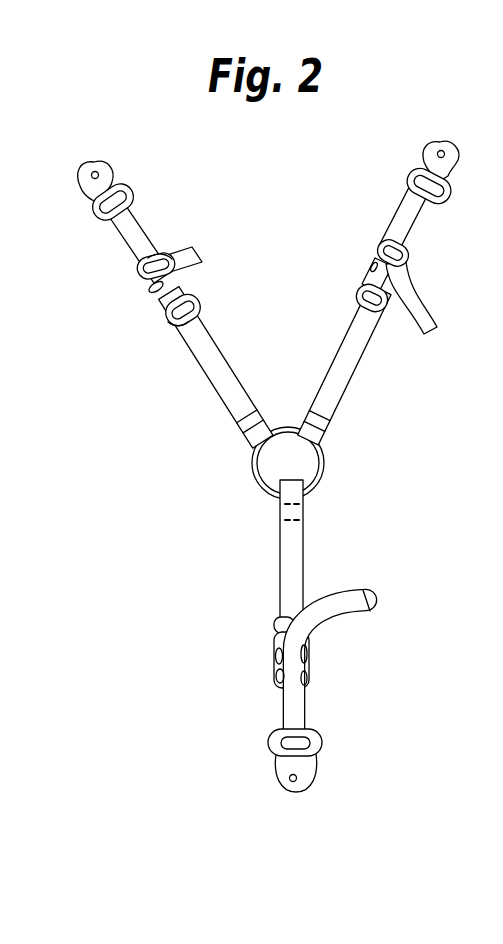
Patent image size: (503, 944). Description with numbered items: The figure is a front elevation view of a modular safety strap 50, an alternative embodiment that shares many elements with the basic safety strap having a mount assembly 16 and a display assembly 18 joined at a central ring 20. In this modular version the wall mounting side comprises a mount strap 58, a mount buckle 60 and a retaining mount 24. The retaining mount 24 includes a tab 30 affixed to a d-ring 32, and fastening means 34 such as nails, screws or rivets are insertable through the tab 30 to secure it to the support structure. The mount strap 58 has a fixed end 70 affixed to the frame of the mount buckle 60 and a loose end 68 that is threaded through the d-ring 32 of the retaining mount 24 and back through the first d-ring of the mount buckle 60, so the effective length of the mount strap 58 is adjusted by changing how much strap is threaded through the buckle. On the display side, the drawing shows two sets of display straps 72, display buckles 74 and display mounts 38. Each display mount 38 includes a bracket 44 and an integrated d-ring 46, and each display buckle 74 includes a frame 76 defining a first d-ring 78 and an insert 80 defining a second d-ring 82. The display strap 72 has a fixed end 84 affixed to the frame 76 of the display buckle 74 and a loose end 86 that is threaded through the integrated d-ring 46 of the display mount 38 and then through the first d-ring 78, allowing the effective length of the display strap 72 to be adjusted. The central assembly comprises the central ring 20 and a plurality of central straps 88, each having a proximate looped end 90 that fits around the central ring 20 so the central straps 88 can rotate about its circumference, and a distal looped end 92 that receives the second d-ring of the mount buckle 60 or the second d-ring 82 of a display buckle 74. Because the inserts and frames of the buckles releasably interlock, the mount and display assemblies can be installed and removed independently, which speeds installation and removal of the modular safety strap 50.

The mount assembly 16 is at (270, 554).
The display assembly 18 is at (114, 249).
The central ring 20 is at (252, 478).
The retaining mount 24 is at (293, 763).
The tab 30 is at (282, 770).
The d-ring 32 is at (272, 735).
The fastening means 34 is at (297, 778).
The display mount 38 is at (88, 186).
The bracket 44 is at (118, 162).
The integrated d-ring 46 is at (88, 207).
The modular safety strap 50 is at (370, 130).
The mount strap 58 is at (306, 705).
The mount buckle 60 is at (280, 636).
The loose end 68 is at (372, 600).
The fixed end 70 is at (278, 670).
The display strap 72 is at (400, 212).
The display buckle 74 is at (196, 297).
The frame 76 is at (140, 272).
The first d-ring 78 is at (160, 258).
The insert 80 is at (152, 292).
The second d-ring 82 is at (172, 318).
The fixed end 84 is at (380, 246).
The loose end 86 is at (200, 249).
The central strap 88 is at (343, 380).
The proximate looped end 90 is at (318, 432).
The distal looped end 92 is at (388, 310).